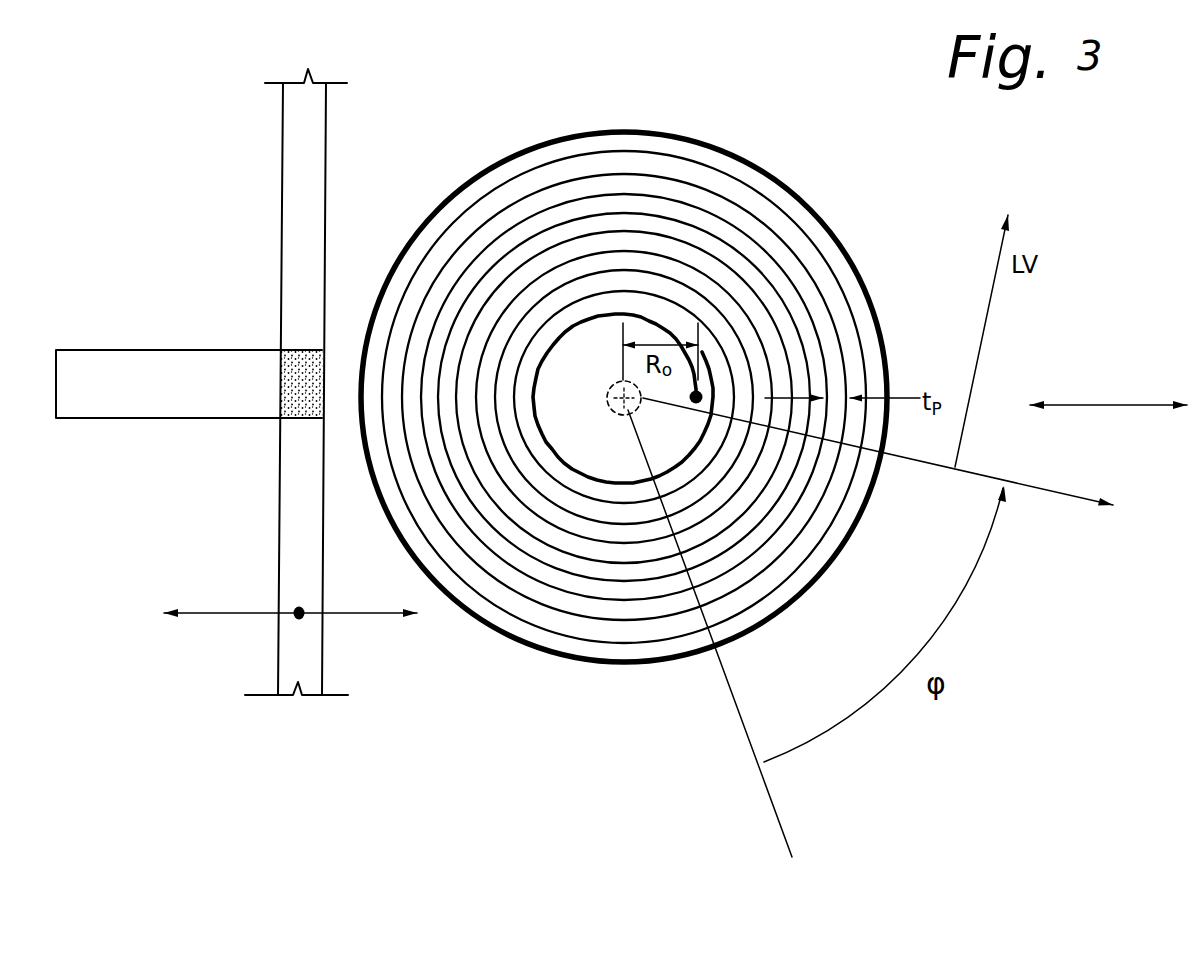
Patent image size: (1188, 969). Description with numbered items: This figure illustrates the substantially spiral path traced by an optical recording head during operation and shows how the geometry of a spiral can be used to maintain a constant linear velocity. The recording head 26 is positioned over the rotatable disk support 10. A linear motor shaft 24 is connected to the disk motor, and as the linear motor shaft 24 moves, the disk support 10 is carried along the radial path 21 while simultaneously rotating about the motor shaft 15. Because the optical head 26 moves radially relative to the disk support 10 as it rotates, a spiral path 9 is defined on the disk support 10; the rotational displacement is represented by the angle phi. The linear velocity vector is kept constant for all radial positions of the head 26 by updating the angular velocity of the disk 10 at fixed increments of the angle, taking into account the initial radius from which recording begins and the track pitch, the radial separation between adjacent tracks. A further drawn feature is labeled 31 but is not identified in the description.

The spiral path 9 is at (850, 288).
The rotatable disk support 10 is at (612, 130).
The motor shaft 15 is at (608, 388).
The radial path 21 is at (1103, 405).
The linear motor shaft 24 is at (157, 419).
The optical recording head 26 is at (696, 404).
The lateral movement arrow 31 is at (220, 613).